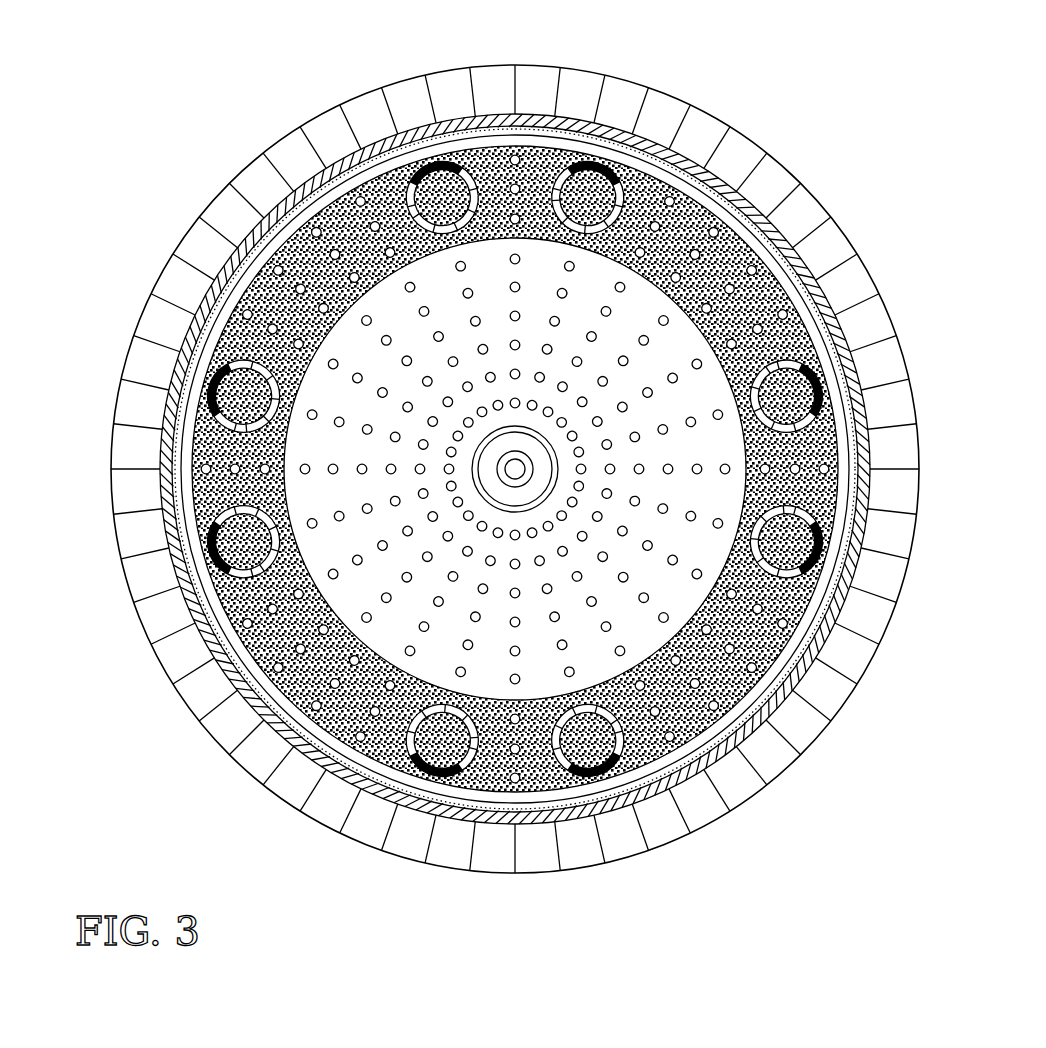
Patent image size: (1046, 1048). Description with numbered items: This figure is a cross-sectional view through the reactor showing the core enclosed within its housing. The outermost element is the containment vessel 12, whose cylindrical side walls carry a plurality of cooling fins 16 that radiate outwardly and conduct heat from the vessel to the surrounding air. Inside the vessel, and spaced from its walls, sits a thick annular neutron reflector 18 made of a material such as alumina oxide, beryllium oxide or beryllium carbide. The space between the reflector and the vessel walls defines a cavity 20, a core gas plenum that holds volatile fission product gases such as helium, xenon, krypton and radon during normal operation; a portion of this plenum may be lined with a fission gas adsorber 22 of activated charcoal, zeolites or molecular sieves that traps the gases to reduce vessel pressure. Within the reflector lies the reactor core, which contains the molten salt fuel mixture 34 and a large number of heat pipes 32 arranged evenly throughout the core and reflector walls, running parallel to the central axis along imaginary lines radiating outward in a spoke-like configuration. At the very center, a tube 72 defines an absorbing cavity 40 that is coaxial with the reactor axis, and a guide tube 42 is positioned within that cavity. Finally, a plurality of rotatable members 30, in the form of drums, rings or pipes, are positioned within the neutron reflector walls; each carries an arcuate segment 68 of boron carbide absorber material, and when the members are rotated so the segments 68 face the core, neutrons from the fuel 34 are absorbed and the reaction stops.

The containment vessel 12 is at (748, 158).
The cooling fins 16 is at (135, 488).
The neutron reflector 18 is at (817, 445).
The cavity 20 is at (483, 797).
The fission gas adsorber 22 is at (280, 720).
The rotatable member 30 is at (615, 185).
The heat pipes 32 is at (548, 180).
The molten salt fuel mixture 34 is at (650, 628).
The absorbing cavity 40 is at (520, 493).
The guide tube 42 is at (527, 473).
The arcuate segment 68 is at (820, 387).
The tube 72 is at (556, 466).